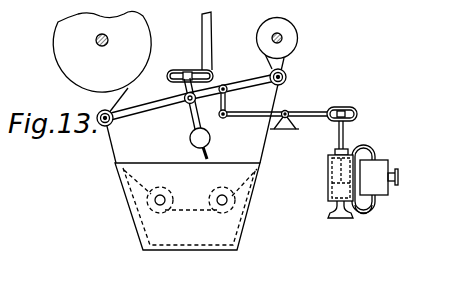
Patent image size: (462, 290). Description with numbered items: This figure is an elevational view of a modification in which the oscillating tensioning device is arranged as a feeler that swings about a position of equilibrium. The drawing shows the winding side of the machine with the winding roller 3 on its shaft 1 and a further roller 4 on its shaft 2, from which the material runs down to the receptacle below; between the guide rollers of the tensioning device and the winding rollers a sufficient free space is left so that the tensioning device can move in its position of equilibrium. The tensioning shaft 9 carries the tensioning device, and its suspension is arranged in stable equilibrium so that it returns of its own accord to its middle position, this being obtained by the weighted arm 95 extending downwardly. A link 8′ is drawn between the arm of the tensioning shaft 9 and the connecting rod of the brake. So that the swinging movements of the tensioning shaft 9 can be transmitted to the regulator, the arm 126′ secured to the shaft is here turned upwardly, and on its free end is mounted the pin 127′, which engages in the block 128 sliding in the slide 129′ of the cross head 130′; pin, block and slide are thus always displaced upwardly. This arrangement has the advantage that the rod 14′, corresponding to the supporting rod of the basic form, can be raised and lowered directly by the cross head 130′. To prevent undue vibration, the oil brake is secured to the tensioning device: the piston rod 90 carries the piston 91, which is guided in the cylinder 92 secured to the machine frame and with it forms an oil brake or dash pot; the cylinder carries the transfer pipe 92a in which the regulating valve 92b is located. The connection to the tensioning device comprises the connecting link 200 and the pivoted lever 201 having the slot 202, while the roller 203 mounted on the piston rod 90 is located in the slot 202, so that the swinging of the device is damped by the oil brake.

The hub shaft 1 is at (98, 43).
The pulley shaft 2 is at (283, 37).
The cam disc 3 is at (78, 76).
The pulley 4 is at (292, 50).
The link 8′ is at (232, 99).
The tensioning shaft 9 is at (196, 101).
The rod 14′ is at (203, 23).
The piston rod 90 is at (346, 125).
The piston 91 is at (333, 175).
The cylinder 92 is at (368, 153).
The transfer pipe 92a is at (373, 212).
The regulating valve 92b is at (378, 166).
The weighted arm 95 is at (212, 136).
The arm 126′ is at (185, 83).
The pin 127′ is at (188, 72).
The block 128 is at (212, 73).
The slide 129′ is at (173, 70).
The cross head 130′ is at (166, 105).
The connecting link 200 is at (228, 110).
The pivoted lever 201 is at (287, 111).
The slot 202 is at (350, 107).
The roller 203 is at (337, 119).